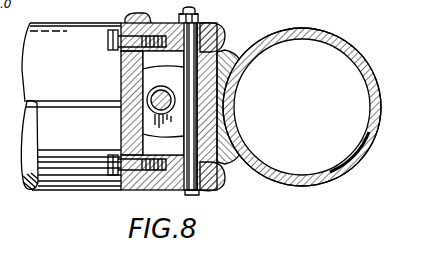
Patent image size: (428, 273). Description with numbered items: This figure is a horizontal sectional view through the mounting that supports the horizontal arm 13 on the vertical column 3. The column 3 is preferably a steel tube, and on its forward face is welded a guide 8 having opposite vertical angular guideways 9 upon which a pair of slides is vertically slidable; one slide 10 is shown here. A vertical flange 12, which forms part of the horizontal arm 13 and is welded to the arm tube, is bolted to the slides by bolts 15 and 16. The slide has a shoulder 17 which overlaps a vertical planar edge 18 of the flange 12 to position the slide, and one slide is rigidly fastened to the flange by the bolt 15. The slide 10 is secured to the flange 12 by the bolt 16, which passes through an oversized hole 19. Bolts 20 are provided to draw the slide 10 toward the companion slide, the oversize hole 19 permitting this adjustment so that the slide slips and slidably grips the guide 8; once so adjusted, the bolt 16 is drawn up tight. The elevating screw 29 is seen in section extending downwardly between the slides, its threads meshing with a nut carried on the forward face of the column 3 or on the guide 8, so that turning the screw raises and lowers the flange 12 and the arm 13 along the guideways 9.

The vertical column 3 is at (366, 92).
The guide 8 is at (226, 96).
The vertical angular guideways 9 is at (215, 27).
The slide 10 is at (171, 190).
The vertical flange 12 is at (119, 126).
The horizontal arm 13 is at (71, 106).
The bolt 15 is at (109, 42).
The bolt 16 is at (113, 164).
The shoulder 17 is at (132, 22).
The vertical planar edge 18 is at (117, 23).
The oversized hole 19 is at (124, 190).
The bolt 20 is at (193, 195).
The elevating screw 29 is at (161, 91).